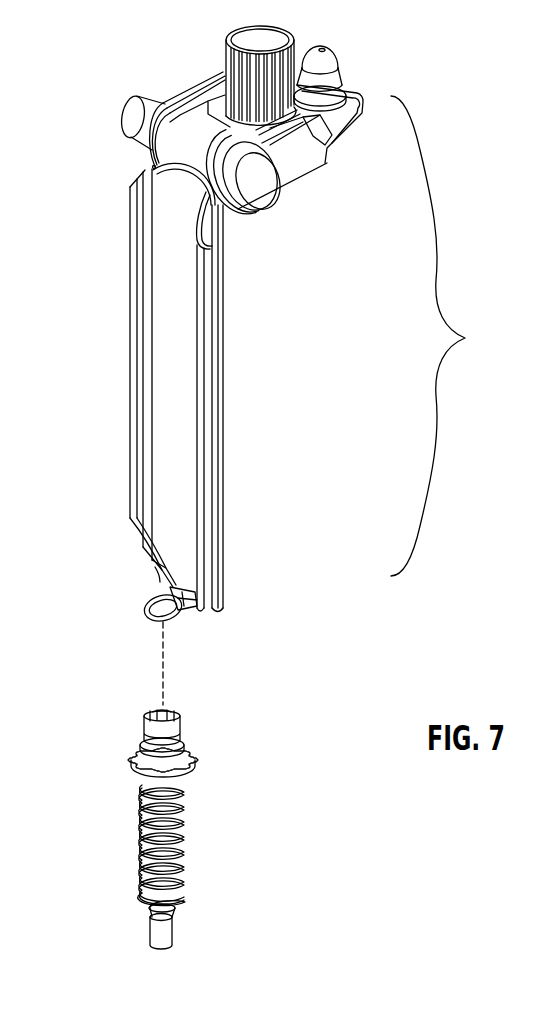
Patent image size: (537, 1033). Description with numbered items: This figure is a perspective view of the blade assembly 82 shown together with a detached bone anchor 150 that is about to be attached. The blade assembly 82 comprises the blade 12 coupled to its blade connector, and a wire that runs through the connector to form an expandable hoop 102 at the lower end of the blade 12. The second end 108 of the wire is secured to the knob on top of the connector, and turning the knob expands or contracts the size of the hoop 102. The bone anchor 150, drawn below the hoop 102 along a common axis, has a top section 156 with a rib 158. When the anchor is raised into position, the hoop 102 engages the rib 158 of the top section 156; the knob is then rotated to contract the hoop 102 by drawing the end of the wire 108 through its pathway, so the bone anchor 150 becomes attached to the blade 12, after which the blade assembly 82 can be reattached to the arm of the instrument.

The blade 12 is at (175, 372).
The blade assembly 82 is at (465, 338).
The expandable hoop 102 is at (142, 620).
The second end of wire 108 is at (208, 82).
The bone anchor 150 is at (213, 825).
The top section 156 is at (182, 727).
The rib 158 is at (193, 760).